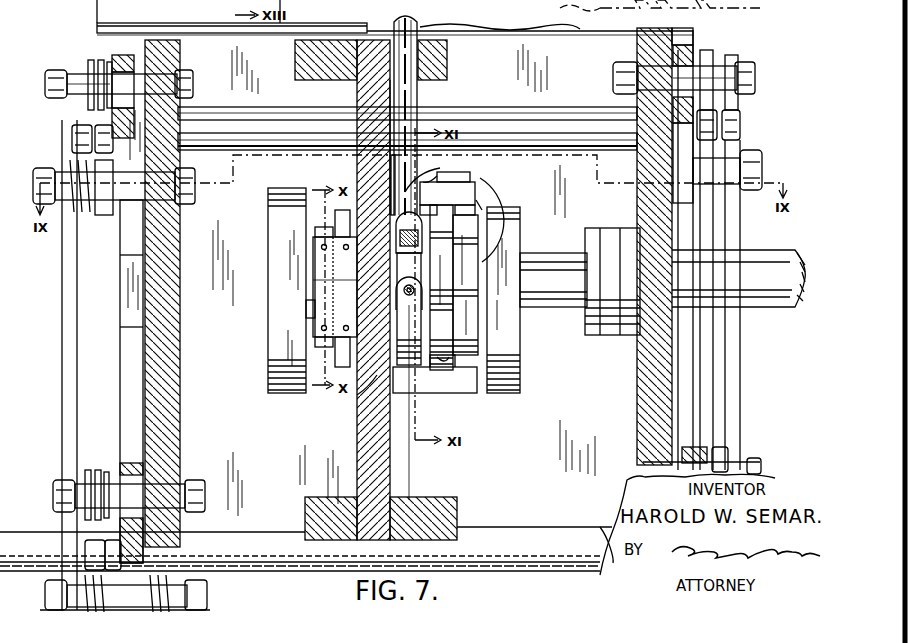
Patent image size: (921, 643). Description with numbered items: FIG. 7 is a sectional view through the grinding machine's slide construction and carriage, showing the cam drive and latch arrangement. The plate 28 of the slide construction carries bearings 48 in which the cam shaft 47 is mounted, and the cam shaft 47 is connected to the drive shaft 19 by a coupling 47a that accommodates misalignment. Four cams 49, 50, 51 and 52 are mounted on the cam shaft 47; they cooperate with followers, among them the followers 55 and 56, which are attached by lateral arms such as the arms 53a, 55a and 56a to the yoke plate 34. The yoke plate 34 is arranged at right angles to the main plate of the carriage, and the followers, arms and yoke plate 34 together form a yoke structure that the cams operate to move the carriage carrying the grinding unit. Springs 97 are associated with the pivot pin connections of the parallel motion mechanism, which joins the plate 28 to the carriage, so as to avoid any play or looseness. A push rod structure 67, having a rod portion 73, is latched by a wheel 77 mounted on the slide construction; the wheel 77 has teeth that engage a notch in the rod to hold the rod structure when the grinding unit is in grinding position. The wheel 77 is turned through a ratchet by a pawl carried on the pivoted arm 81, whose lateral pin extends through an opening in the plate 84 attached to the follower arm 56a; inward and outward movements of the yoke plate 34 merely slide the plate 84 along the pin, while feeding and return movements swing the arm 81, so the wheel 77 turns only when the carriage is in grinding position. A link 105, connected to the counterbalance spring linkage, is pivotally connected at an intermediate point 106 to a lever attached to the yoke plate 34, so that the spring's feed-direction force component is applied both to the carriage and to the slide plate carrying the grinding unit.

The drive shaft 19 is at (776, 296).
The plate 28 is at (460, 50).
The yoke plate 34 is at (361, 105).
The cam shaft 47 is at (282, 313).
The coupling 47a is at (598, 230).
The bearings 48 is at (290, 348).
The cam 49 is at (342, 370).
The cam 50 is at (328, 236).
The cam 51 is at (440, 286).
The cam 52 is at (464, 239).
The lateral arm 53a is at (325, 295).
The follower 55 is at (448, 366).
The lateral arm 55a is at (422, 395).
The follower 56 is at (458, 190).
The lateral arm 56a is at (430, 180).
The push rod structure 67 is at (376, 384).
The rod portion 73 is at (410, 283).
The wheel 77 is at (393, 163).
The pivoted arm 81 is at (478, 203).
The plate 84 is at (462, 173).
The springs 97 is at (98, 60).
The link 105 is at (398, 97).
The intermediate point 106 is at (413, 235).